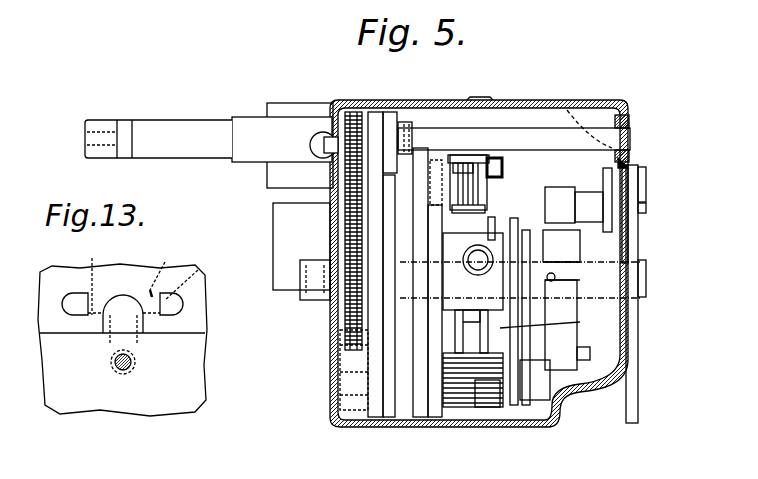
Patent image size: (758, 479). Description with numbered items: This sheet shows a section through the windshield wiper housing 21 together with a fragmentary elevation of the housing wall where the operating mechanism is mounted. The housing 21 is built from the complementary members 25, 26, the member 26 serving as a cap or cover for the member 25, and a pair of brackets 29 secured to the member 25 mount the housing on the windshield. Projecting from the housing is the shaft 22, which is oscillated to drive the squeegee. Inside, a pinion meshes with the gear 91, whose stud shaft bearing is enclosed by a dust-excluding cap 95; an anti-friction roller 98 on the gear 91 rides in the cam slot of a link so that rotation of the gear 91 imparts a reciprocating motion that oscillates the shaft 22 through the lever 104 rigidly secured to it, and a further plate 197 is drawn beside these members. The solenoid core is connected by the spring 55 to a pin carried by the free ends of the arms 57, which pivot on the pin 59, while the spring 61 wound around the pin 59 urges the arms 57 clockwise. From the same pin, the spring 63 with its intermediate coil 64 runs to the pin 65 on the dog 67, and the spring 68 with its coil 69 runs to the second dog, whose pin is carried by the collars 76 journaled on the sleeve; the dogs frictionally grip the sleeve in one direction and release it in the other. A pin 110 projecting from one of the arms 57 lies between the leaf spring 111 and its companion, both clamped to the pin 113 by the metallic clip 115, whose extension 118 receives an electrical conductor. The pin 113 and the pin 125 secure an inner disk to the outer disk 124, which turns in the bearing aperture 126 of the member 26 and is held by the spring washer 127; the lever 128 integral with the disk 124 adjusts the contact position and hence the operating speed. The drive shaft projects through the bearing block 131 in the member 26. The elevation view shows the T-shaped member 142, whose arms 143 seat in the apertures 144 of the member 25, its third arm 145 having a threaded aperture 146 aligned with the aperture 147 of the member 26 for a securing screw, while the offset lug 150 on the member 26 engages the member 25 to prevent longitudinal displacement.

In FIG. 5, the housing 21 is at (426, 103).
In FIG. 5, the shaft 22 is at (250, 122).
In FIG. 5, the complementary member 25 is at (382, 103).
In FIG. 5, the complementary member 26 is at (575, 103).
In FIG. 13, the complementary member 26 is at (70, 395).
In FIG. 5, the brackets 29 is at (312, 112).
In FIG. 5, the spring 55 is at (485, 230).
In FIG. 5, the arms 57 is at (433, 363).
In FIG. 5, the pin 59 is at (545, 400).
In FIG. 5, the spring 61 is at (463, 400).
In FIG. 5, the spring 63 is at (488, 182).
In FIG. 5, the coil 64 is at (462, 156).
In FIG. 5, the pin 65 is at (490, 160).
In FIG. 5, the dog 67 is at (455, 156).
In FIG. 5, the spring 68 is at (492, 410).
In FIG. 5, the coil 69 is at (549, 322).
In FIG. 5, the collars 76 is at (520, 235).
In FIG. 5, the gear 91 is at (345, 332).
In FIG. 5, the cap 95 is at (273, 210).
In FIG. 5, the anti-friction roller 98 is at (385, 264).
In FIG. 5, the lever 104 is at (397, 170).
In FIG. 5, the pin 110 is at (590, 355).
In FIG. 5, the leaf spring 111 is at (572, 343).
In FIG. 5, the pin 113 is at (585, 200).
In FIG. 5, the metallic clip 115 is at (577, 252).
In FIG. 5, the extension 118 is at (555, 200).
In FIG. 5, the disk 124 is at (632, 167).
In FIG. 5, the pin 125 is at (646, 182).
In FIG. 5, the bearing aperture 126 is at (628, 160).
In FIG. 5, the spring washer 127 is at (646, 208).
In FIG. 5, the lever 128 is at (640, 370).
In FIG. 5, the bearing block 131 is at (646, 284).
In FIG. 13, the T-shaped member 142 is at (169, 269).
In FIG. 13, the arms 143 is at (147, 278).
In FIG. 13, the apertures 144 is at (78, 305).
In FIG. 13, the third arm 145 is at (137, 340).
In FIG. 13, the threaded aperture 146 is at (123, 372).
In FIG. 13, the aperture 147 is at (111, 362).
In FIG. 13, the offset lug 150 is at (122, 305).
In FIG. 5, the plate 197 is at (393, 232).